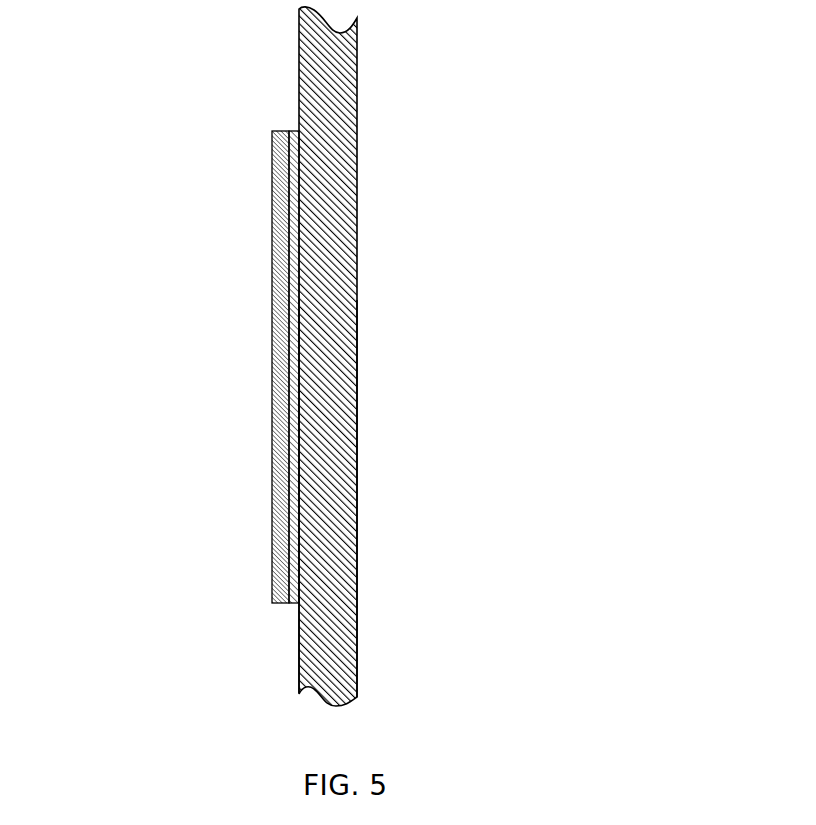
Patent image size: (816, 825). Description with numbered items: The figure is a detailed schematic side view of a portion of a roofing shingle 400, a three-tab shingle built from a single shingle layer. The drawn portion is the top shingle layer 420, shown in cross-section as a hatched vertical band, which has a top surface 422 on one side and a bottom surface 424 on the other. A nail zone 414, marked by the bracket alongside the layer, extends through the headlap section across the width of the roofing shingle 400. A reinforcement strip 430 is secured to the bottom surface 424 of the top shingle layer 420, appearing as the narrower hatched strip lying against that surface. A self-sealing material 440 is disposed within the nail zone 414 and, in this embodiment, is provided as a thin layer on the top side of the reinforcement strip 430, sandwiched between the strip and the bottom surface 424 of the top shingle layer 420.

The roofing shingle 400 is at (613, 160).
The nail zone 414 is at (393, 133).
The top shingle layer 420 is at (379, 101).
The top surface 422 is at (357, 645).
The bottom surface 424 is at (299, 652).
The reinforcement strip 430 is at (228, 262).
The self-sealing material 440 is at (294, 130).